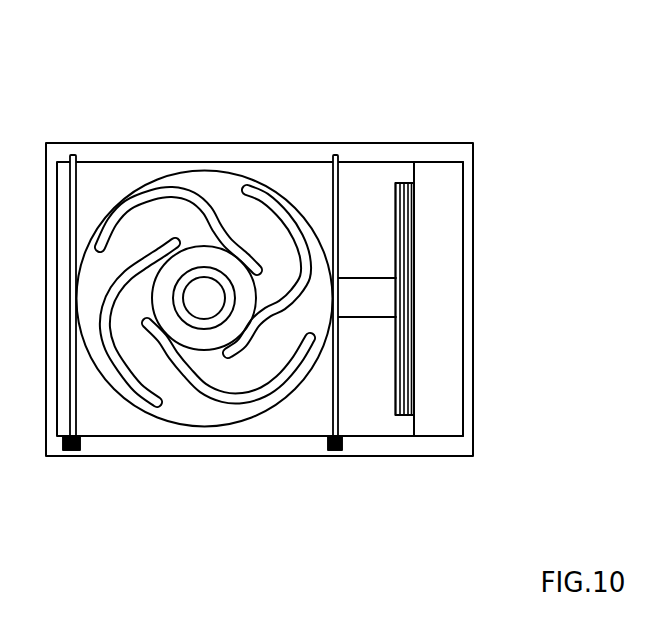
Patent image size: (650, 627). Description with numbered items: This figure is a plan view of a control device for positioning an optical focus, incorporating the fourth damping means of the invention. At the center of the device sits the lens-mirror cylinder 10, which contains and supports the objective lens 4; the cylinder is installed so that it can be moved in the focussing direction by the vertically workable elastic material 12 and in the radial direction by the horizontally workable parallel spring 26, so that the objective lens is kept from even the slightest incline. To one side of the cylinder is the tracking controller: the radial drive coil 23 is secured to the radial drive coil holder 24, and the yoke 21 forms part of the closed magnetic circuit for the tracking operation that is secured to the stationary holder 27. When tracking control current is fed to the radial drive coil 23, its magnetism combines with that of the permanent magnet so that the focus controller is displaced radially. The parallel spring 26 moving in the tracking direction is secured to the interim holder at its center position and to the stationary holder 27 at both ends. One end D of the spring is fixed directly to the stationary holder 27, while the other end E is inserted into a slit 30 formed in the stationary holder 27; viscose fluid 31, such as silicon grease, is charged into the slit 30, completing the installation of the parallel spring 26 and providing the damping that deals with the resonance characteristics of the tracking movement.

The objective lens 4 is at (212, 304).
The lens-mirror cylinder 10 is at (208, 338).
The elastic material 12 is at (232, 189).
The yoke 21 is at (448, 205).
The radial drive coil 23 is at (408, 183).
The radial drive coil holder 24 is at (397, 181).
The parallel spring 26 is at (76, 177).
The stationary holder 27 is at (435, 445).
The slit 30 is at (76, 448).
The viscose fluid 31 is at (202, 443).
The one end D is at (74, 157).
The other end E is at (65, 447).